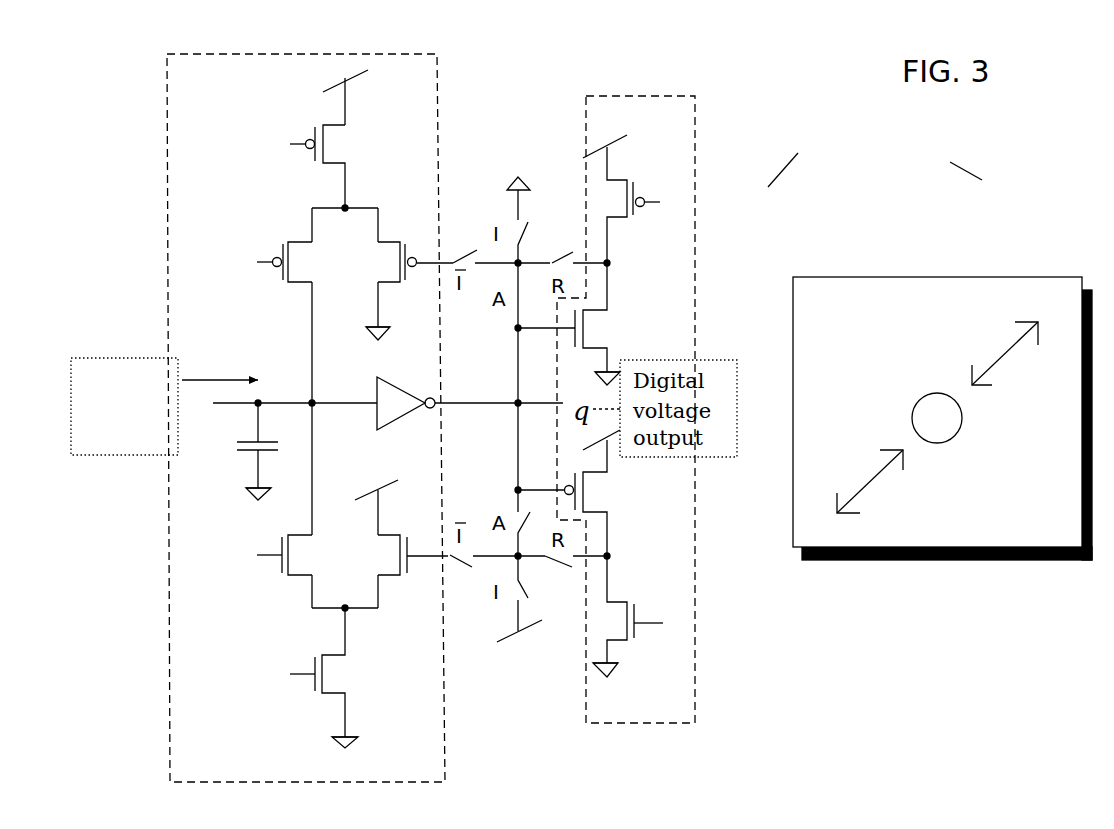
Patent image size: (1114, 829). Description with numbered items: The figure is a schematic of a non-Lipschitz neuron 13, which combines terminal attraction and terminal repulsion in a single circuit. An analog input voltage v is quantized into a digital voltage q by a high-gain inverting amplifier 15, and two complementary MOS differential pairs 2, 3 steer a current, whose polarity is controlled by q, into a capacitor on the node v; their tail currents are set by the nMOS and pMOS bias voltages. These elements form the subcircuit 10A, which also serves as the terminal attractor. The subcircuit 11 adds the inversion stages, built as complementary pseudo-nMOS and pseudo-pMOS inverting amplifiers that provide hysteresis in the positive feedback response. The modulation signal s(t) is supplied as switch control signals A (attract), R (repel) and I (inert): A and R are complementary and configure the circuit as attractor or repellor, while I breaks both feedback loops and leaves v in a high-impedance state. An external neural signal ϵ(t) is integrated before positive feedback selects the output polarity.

The MOS differential pair 2 is at (395, 260).
The MOS differential pair 3 is at (395, 553).
The subcircuit 10A is at (440, 140).
The subcircuit 11 is at (584, 137).
The non-Lipschitz neuron 13 is at (729, 97).
The high-gain inverting amplifier 15 is at (391, 388).